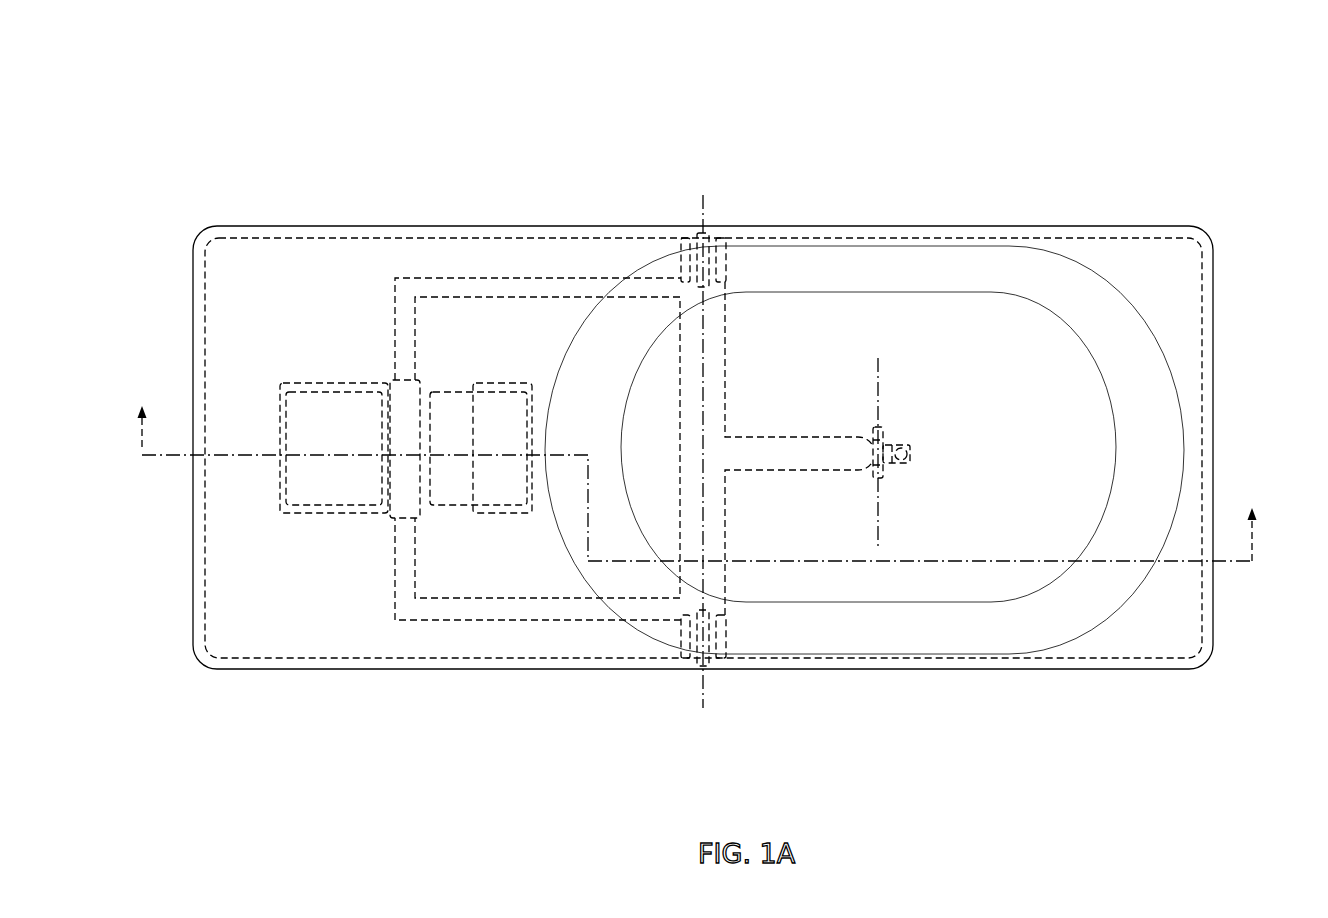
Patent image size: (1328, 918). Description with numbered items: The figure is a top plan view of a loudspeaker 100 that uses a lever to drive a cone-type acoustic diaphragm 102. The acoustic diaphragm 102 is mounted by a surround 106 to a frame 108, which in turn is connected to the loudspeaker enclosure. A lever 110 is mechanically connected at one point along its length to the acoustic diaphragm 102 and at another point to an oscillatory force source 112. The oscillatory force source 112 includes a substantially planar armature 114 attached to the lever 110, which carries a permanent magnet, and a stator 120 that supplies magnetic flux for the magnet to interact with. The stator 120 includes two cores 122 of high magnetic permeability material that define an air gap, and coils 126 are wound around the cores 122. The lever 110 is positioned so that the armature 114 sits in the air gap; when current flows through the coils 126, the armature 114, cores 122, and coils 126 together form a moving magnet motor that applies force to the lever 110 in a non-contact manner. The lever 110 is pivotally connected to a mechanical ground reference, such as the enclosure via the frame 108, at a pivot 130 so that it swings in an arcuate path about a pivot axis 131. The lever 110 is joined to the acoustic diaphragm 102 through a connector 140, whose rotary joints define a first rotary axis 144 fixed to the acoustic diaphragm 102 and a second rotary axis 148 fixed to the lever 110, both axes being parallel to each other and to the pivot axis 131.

The loudspeaker 100 is at (227, 96).
The acoustic diaphragm 102 is at (1022, 327).
The surround 106 is at (1117, 337).
The frame 108 is at (1213, 358).
The lever 110 is at (780, 437).
The oscillatory force source 112 is at (397, 449).
The armature 114 is at (420, 450).
The stator 120 is at (358, 388).
The cores 122 is at (473, 475).
The coils 126 is at (280, 493).
The pivot 130 is at (727, 256).
The pivot axis 131 is at (700, 688).
The connector 140 is at (880, 479).
The first rotary axis 144 is at (882, 383).
The second rotary axis 148 is at (932, 391).